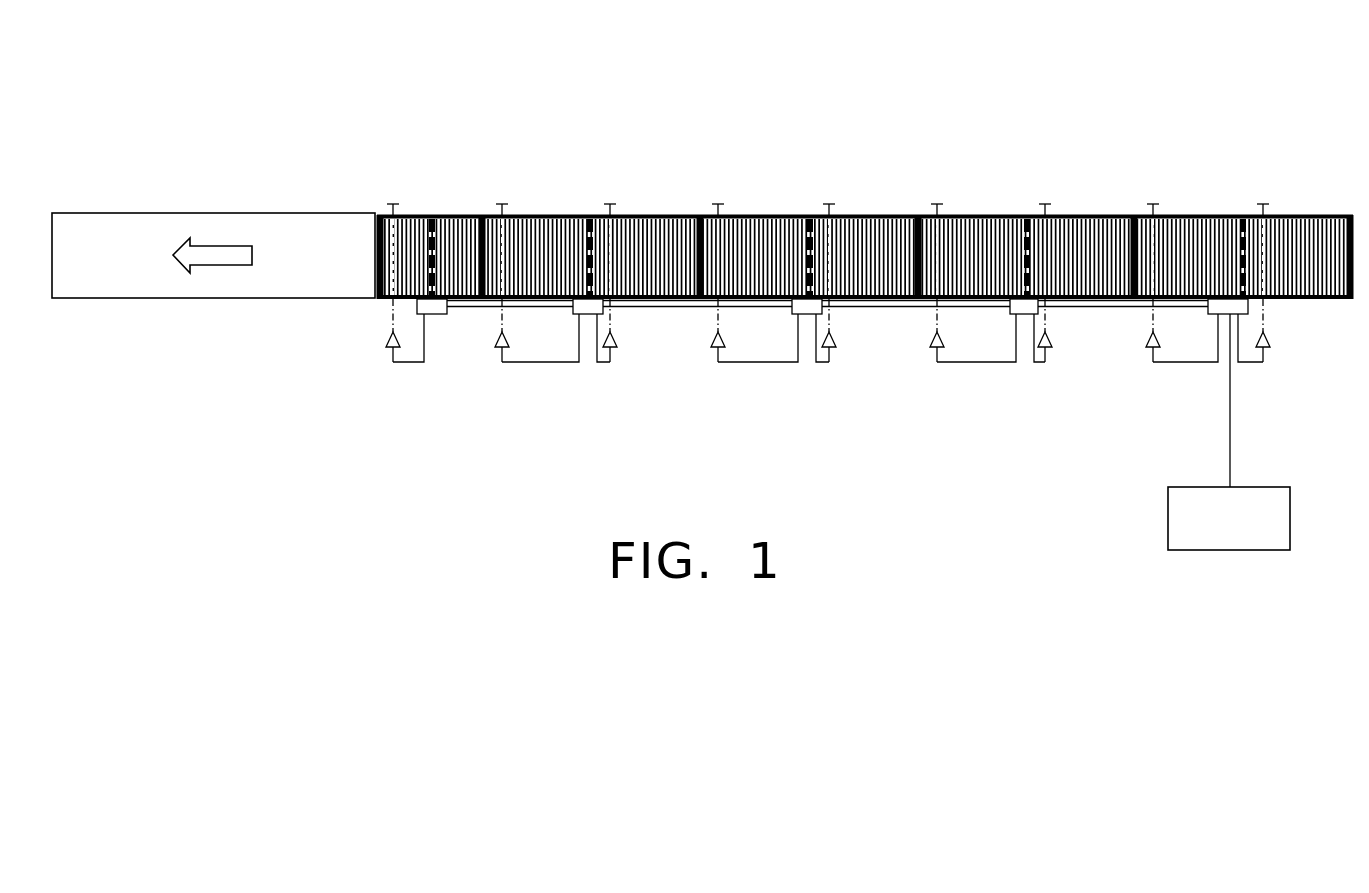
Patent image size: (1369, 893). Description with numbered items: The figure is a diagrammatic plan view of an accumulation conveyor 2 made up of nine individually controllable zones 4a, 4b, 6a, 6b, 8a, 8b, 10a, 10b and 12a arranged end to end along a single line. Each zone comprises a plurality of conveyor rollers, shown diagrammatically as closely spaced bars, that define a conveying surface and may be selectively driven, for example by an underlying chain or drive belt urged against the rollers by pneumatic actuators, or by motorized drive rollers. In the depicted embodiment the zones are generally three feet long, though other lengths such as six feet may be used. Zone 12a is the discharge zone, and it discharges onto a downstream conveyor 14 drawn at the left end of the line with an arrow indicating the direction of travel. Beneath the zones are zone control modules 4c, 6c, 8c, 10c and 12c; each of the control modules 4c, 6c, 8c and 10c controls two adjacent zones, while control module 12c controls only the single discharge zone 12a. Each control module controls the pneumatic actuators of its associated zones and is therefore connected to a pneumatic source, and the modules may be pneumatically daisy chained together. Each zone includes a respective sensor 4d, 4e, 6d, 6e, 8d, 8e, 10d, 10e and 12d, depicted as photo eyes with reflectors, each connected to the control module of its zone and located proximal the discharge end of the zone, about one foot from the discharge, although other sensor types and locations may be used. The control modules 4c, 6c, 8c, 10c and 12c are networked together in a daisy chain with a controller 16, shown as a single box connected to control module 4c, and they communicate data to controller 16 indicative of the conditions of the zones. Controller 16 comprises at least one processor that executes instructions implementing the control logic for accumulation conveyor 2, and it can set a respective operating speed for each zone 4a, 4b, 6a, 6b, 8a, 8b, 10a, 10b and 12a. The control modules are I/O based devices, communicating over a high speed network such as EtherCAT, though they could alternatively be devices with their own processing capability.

The accumulation conveyor 2 is at (1088, 42).
The conveyor 14 is at (158, 213).
The controller 16 is at (1187, 551).
The zone 12a is at (418, 214).
The control module 12c is at (432, 315).
The sensor 12d is at (388, 346).
The zone 10a is at (643, 214).
The zone 10b is at (531, 214).
The zone control module 10c is at (577, 315).
The sensor 10d is at (615, 347).
The sensor 10e is at (500, 347).
The zone 8a is at (861, 214).
The zone 8b is at (752, 214).
The zone control module 8c is at (797, 315).
The sensor 8d is at (833, 347).
The sensor 8e is at (716, 347).
The zone 6a is at (1074, 214).
The zone 6b is at (964, 214).
The zone control module 6c is at (1013, 315).
The sensor 6d is at (1050, 347).
The sensor 6e is at (935, 347).
The zone 4a is at (1291, 214).
The zone 4b is at (1180, 214).
The zone control module 4c is at (1218, 315).
The sensor 4d is at (1266, 347).
The sensor 4e is at (1152, 347).